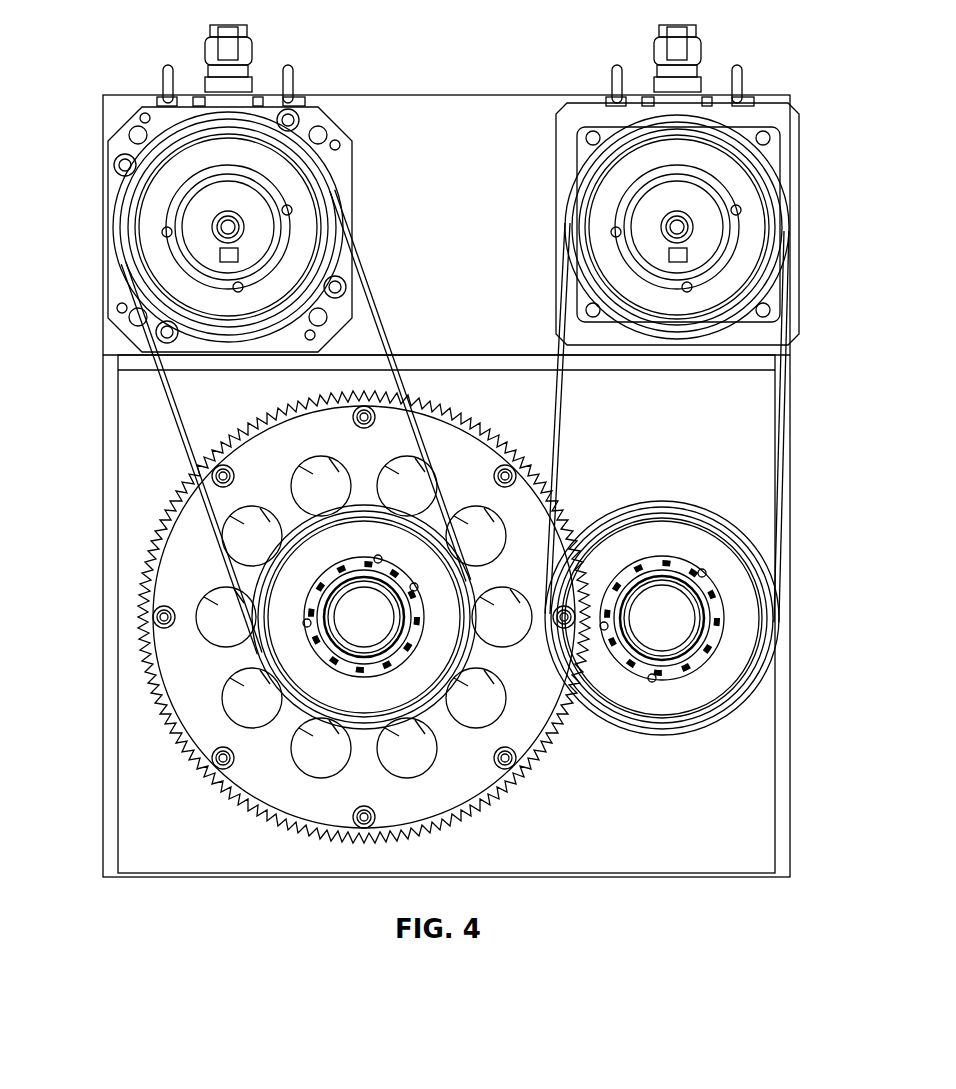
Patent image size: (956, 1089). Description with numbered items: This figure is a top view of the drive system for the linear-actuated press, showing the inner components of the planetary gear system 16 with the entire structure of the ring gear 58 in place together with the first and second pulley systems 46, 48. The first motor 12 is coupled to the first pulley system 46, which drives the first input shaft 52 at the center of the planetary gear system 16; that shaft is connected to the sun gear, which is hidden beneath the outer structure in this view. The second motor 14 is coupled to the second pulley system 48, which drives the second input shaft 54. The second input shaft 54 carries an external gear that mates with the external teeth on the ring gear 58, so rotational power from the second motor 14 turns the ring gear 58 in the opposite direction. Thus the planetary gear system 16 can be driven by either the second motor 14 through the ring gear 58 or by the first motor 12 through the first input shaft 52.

The first motor 12 is at (138, 135).
The second motor 14 is at (770, 140).
The planetary gear system 16 is at (562, 753).
The first pulley system 46 is at (160, 392).
The second pulley system 48 is at (762, 428).
The first input shaft 52 is at (364, 617).
The second input shaft 54 is at (660, 627).
The ring gear 58 is at (145, 567).